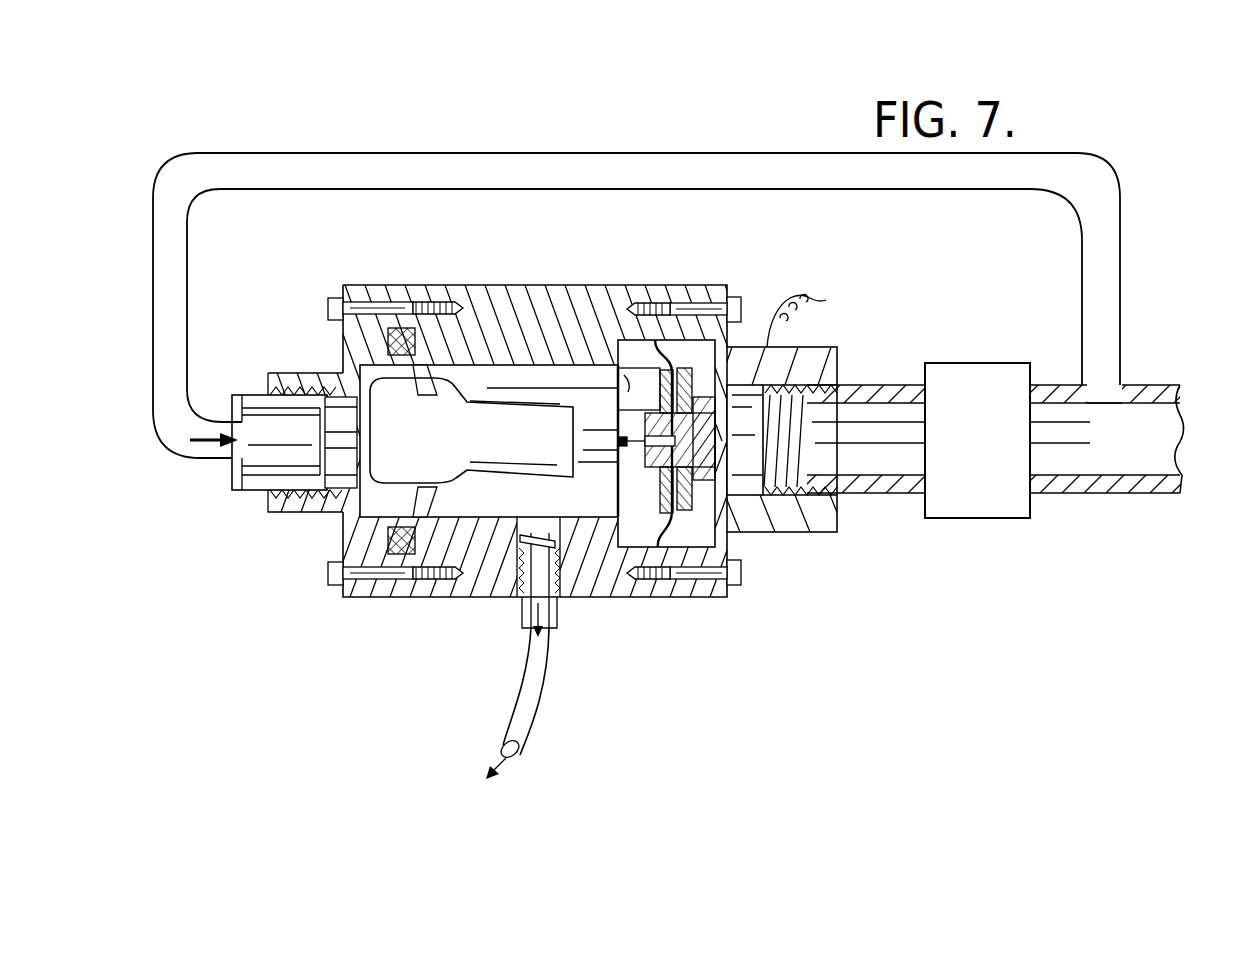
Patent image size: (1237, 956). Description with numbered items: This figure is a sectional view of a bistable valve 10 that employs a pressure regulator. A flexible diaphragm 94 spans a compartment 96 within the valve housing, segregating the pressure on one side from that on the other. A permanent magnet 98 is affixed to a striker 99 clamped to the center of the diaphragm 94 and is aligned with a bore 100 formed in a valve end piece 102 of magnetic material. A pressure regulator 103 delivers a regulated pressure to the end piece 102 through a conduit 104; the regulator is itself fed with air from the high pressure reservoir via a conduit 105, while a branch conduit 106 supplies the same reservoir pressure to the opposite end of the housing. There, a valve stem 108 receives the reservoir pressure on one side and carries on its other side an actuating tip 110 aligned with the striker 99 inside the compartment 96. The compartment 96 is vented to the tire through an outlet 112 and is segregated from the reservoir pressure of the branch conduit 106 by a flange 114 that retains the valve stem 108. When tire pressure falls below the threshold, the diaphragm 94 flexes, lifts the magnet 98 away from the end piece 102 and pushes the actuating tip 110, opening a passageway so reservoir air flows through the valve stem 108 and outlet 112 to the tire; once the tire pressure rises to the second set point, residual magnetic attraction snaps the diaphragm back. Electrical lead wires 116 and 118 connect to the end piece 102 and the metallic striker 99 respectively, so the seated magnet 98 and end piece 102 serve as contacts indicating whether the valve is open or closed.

The bistable valve 10 is at (276, 647).
The flexible diaphragm 94 is at (621, 374).
The compartment 96 is at (657, 336).
The permanent magnet 98 is at (708, 352).
The striker 99 is at (548, 348).
The bore 100 is at (731, 427).
The valve end piece 102 is at (820, 347).
The pressure regulator 103 is at (995, 505).
The conduit 104 is at (884, 485).
The conduit 105 is at (1147, 495).
The branch conduit 106 is at (670, 163).
The valve stem 108 is at (500, 478).
The actuating tip 110 is at (623, 447).
The outlet 112 is at (535, 690).
The flange 114 is at (400, 484).
The electrical lead wire 116 is at (820, 306).
The electrical lead wire 118 is at (688, 355).